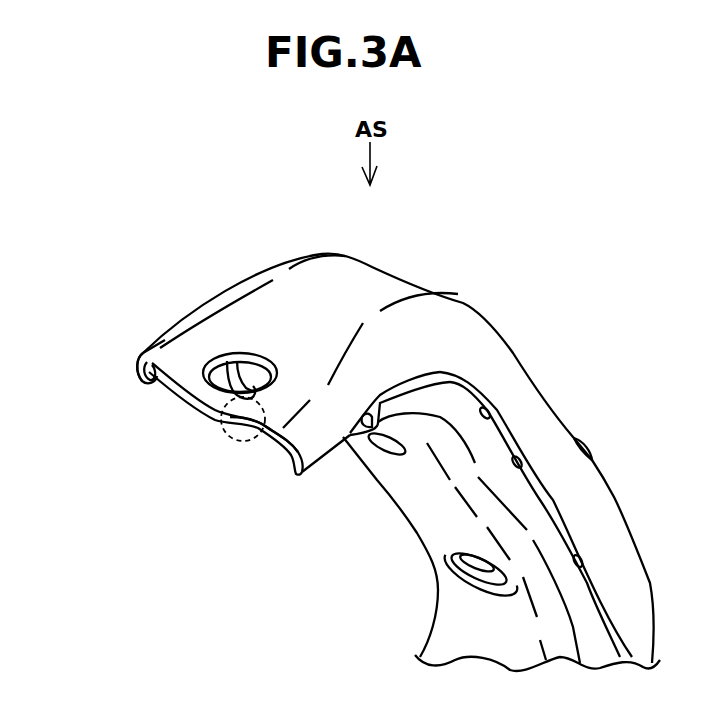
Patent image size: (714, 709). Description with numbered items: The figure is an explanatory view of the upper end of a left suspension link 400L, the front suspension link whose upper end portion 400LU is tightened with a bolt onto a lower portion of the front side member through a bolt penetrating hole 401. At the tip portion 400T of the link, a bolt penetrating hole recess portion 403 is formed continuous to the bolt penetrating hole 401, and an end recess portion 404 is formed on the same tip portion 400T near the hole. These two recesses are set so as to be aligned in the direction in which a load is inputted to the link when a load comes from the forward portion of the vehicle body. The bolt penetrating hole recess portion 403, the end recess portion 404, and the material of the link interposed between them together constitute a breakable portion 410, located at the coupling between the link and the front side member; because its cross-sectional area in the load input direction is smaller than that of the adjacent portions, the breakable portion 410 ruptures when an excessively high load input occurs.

The left suspension link 400L is at (377, 281).
The upper end portion 400LU is at (243, 314).
The tip portion 400T is at (170, 383).
The bolt penetrating hole 401 is at (214, 375).
The bolt penetrating hole recess portion 403 is at (226, 396).
The end recess portion 404 is at (250, 423).
The breakable portion 410 is at (222, 445).